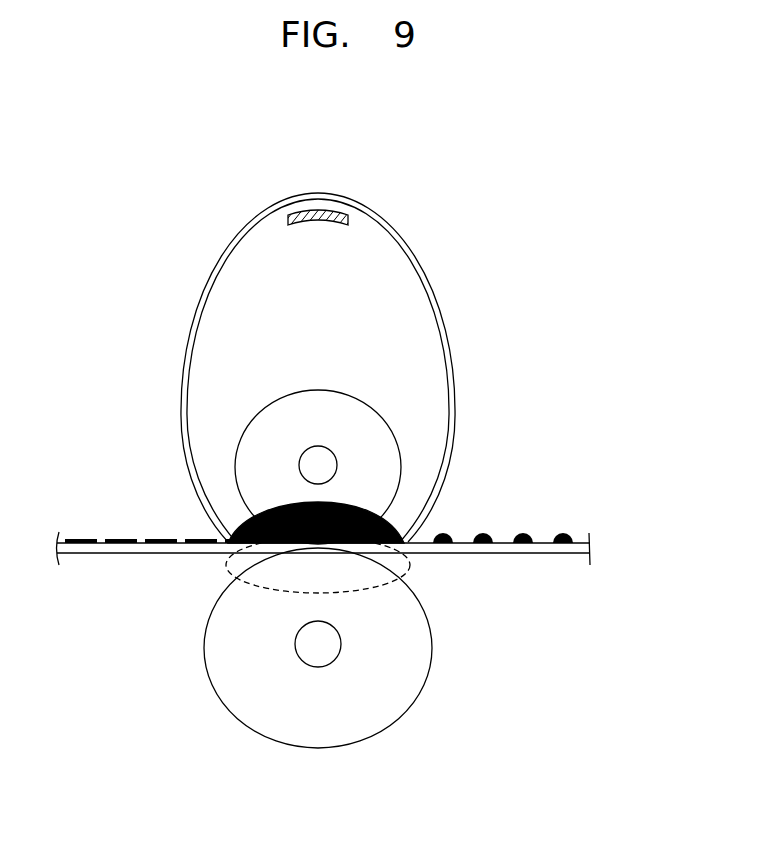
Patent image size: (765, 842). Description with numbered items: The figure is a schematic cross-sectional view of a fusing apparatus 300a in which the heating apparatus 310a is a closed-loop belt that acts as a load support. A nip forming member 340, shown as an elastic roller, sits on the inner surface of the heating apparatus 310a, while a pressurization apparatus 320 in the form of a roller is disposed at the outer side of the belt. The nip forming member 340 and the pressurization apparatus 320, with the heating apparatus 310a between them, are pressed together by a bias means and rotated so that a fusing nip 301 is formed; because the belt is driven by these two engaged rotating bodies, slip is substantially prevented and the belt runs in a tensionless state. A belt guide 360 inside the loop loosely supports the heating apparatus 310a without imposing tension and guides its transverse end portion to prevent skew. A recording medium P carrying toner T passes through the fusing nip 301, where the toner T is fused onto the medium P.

The fusing apparatus 300a is at (354, 433).
The heating apparatus 310a is at (447, 343).
The pressurization apparatus 320 is at (418, 693).
The nip forming member 340 is at (399, 452).
The belt guide 360 is at (298, 226).
The fusing nip 301 is at (348, 505).
The toner T is at (566, 534).
The recording medium (paper) P is at (550, 555).